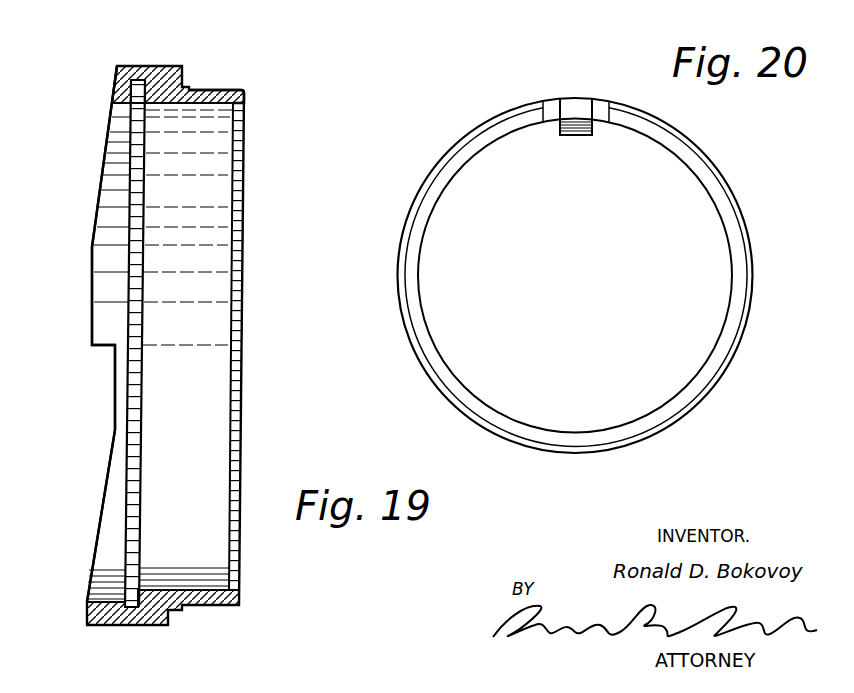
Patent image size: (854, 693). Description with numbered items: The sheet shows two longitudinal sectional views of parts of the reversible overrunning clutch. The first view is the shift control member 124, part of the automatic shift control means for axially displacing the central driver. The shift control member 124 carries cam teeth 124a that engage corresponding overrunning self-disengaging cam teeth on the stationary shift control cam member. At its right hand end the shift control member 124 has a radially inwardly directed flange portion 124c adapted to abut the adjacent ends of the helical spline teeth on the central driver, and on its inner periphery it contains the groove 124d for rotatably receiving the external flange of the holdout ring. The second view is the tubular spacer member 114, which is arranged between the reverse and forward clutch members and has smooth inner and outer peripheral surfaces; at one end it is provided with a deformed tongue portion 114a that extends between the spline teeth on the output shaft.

In FIG. 19, the shift control member 124 is at (238, 375).
In FIG. 19, the cam teeth 124a is at (107, 257).
In FIG. 19, the flange portion 124c is at (246, 106).
In FIG. 19, the groove 124d is at (133, 387).
In FIG. 20, the spacer member 114 is at (412, 274).
In FIG. 20, the deformed tongue portion 114a is at (580, 137).